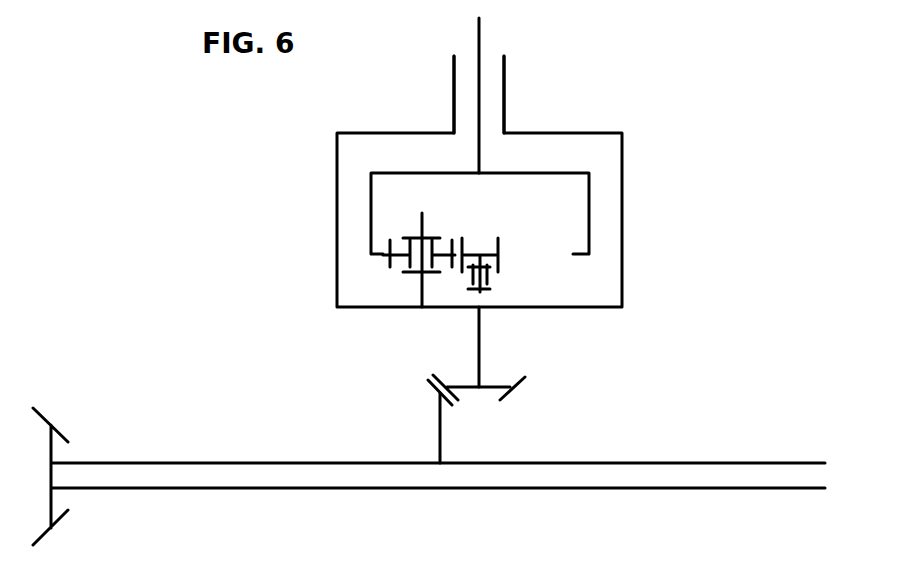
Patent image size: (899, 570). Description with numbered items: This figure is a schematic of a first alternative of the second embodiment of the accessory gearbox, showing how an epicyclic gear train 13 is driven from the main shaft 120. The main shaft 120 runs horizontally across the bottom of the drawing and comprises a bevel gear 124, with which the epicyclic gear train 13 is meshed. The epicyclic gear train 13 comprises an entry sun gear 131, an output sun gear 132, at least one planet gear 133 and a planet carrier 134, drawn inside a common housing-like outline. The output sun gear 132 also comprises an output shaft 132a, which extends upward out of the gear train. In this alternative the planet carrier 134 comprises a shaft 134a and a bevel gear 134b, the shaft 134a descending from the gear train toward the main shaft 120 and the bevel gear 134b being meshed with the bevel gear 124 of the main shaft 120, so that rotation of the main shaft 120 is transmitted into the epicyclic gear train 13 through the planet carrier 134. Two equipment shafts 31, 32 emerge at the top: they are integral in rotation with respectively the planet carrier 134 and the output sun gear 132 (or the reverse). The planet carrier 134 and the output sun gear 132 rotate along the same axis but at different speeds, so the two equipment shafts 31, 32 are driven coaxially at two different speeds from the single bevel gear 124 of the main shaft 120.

The epicyclic gear train 13 is at (701, 221).
The equipment shaft 31 is at (453, 93).
The equipment shaft 32 is at (481, 43).
The main shaft 120 is at (239, 456).
The bevel gear 124 is at (438, 432).
The entry sun gear 131 is at (500, 247).
The output sun gear 132 is at (590, 210).
The output shaft 132a is at (482, 110).
The planet gear 133 is at (430, 237).
The planet carrier 134 is at (547, 358).
The shaft 134a is at (482, 355).
The bevel gear 134b is at (523, 380).